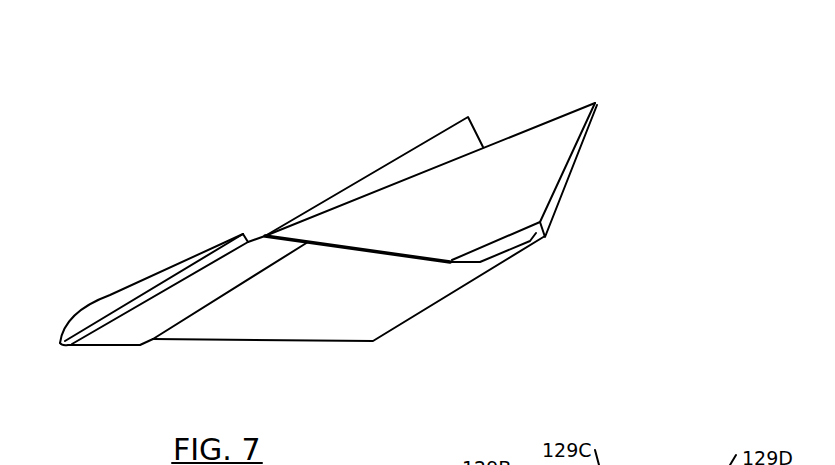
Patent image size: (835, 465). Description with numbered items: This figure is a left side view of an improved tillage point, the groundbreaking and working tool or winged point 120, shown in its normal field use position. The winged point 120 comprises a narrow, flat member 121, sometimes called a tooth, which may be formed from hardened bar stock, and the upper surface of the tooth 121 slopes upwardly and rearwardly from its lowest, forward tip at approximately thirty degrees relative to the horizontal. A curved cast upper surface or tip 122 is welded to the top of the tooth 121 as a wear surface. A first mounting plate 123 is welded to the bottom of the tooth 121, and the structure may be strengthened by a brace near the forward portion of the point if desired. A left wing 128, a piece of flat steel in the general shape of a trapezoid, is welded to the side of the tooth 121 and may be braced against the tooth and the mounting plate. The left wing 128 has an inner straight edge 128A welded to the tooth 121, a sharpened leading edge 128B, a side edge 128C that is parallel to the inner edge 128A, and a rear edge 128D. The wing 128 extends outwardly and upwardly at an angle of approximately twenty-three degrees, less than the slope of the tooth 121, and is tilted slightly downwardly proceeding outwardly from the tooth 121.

The winged point 120 is at (553, 72).
The flat member 121 is at (137, 328).
The curved cast upper surface 122 is at (125, 293).
The first mounting plate 123 is at (250, 322).
The left wing 128 is at (388, 217).
The inner straight edge 128A is at (517, 132).
The sharpened leading edge 128B is at (405, 257).
The side edge 128C is at (530, 241).
The rear edge 128D is at (568, 172).